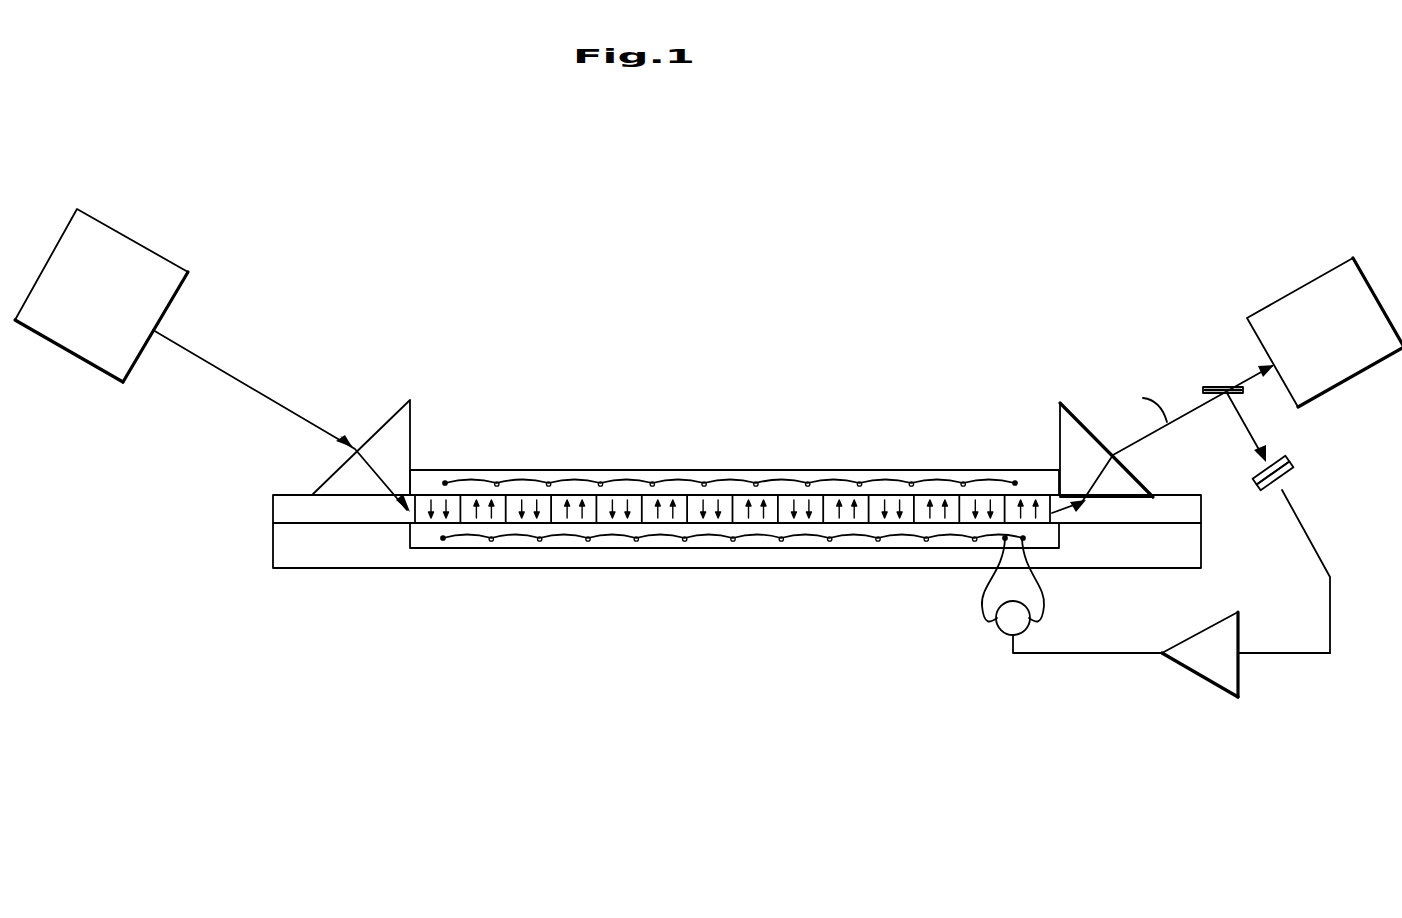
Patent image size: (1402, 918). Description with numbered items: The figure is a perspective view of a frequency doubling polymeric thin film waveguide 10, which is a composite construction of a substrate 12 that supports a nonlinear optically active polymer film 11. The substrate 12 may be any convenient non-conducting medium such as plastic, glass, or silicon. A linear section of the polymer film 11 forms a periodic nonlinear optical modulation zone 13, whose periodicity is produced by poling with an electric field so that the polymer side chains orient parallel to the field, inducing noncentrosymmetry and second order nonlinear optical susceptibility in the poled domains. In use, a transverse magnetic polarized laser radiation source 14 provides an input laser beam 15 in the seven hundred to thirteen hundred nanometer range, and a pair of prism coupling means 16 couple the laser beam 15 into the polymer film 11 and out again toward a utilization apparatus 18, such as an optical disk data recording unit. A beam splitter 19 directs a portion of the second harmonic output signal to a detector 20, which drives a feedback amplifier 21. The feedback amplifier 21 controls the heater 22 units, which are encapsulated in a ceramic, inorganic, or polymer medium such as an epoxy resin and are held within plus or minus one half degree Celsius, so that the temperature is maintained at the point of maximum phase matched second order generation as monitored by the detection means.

The thin film waveguide 10 is at (635, 508).
The nonlinear optically active polymer film 11 is at (277, 515).
The substrate 12 is at (282, 550).
The periodic nonlinear optical modulation zone 13 is at (807, 498).
The TM polarized laser radiation source 14 is at (140, 242).
The input laser beam 15 is at (258, 392).
The prism coupling means 16 is at (410, 423).
The utilization apparatus 18 is at (1317, 275).
The beam splitter 19 is at (1218, 387).
The detector 20 is at (1293, 460).
The feedback amplifier 21 is at (1193, 673).
The heater 22 is at (937, 480).